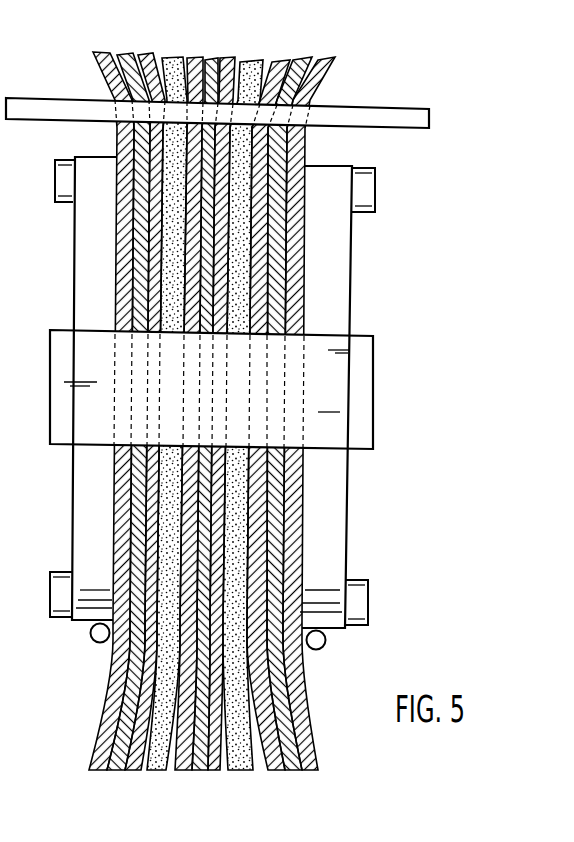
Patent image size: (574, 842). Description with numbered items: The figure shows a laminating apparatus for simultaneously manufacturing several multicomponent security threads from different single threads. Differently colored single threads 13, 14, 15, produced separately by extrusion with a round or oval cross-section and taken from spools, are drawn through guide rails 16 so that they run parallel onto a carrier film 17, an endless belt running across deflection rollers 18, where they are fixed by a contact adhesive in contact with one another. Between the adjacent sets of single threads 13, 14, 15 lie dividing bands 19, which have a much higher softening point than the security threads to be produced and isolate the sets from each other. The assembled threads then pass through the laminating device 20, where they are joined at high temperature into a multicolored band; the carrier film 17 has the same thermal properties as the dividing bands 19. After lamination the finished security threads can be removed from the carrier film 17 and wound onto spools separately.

The single thread 13 is at (105, 55).
The single thread 14 is at (125, 55).
The single thread 15 is at (145, 55).
The dividing band 19 is at (170, 58).
The guide rail 16 is at (400, 117).
The carrier film 17 is at (343, 278).
The deflection roller 18 is at (376, 203).
The laminating device 20 is at (365, 390).